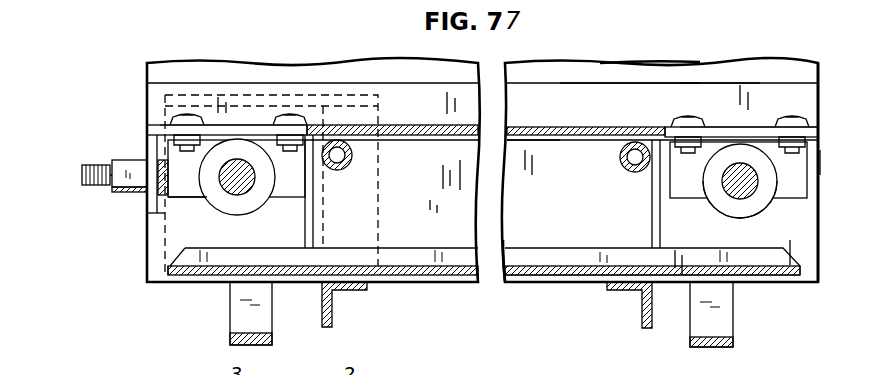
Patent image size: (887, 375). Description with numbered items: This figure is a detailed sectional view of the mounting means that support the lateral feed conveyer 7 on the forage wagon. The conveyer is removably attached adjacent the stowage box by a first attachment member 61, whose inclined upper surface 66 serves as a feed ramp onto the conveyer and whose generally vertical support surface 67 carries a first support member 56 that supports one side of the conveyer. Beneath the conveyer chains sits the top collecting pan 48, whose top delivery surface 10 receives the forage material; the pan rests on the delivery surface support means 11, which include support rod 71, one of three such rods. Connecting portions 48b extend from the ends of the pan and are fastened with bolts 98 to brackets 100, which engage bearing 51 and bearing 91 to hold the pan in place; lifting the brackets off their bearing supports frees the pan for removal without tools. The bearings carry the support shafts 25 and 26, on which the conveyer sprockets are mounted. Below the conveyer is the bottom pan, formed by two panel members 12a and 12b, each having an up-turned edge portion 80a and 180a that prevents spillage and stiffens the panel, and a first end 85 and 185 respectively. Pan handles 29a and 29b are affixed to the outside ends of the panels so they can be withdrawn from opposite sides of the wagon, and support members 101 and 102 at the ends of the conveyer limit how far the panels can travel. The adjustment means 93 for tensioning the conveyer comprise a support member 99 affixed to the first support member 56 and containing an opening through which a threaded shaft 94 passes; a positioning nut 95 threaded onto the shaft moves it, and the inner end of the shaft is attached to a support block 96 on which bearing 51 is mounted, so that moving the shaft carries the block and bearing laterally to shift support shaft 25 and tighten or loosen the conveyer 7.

The lateral feed conveyer 7 is at (832, 106).
The top delivery surface 10 is at (532, 127).
The delivery surface support means 11 is at (618, 156).
The panel member 12a is at (593, 264).
The panel member 12b is at (433, 278).
The support shaft 25 is at (240, 190).
The support shaft 26 is at (737, 198).
The pan handle 29a is at (735, 343).
The pan handle 29b is at (230, 336).
The top collecting pan 48 is at (552, 127).
The connecting portion 48b is at (228, 123).
The bearing 51 is at (203, 198).
The first support member 56 is at (481, 287).
The first attachment member 61 is at (663, 60).
The inclined upper surface 66 is at (612, 72).
The vertical support surface 67 is at (700, 100).
The support rod 71 is at (345, 160).
The up-turned edge portion 80a is at (532, 260).
The first end 85 is at (803, 273).
The bearing 91 is at (758, 202).
The adjustment means 93 is at (108, 146).
The threaded shaft 94 is at (80, 178).
The positioning nut 95 is at (122, 160).
The support block 96 is at (185, 238).
The bolt 98 is at (183, 116).
The support member 99 is at (150, 207).
The bracket 100 is at (292, 187).
The support member 101 is at (640, 329).
The support member 102 is at (320, 310).
The up-turned edge portion 180a is at (387, 252).
The first end 185 is at (170, 268).